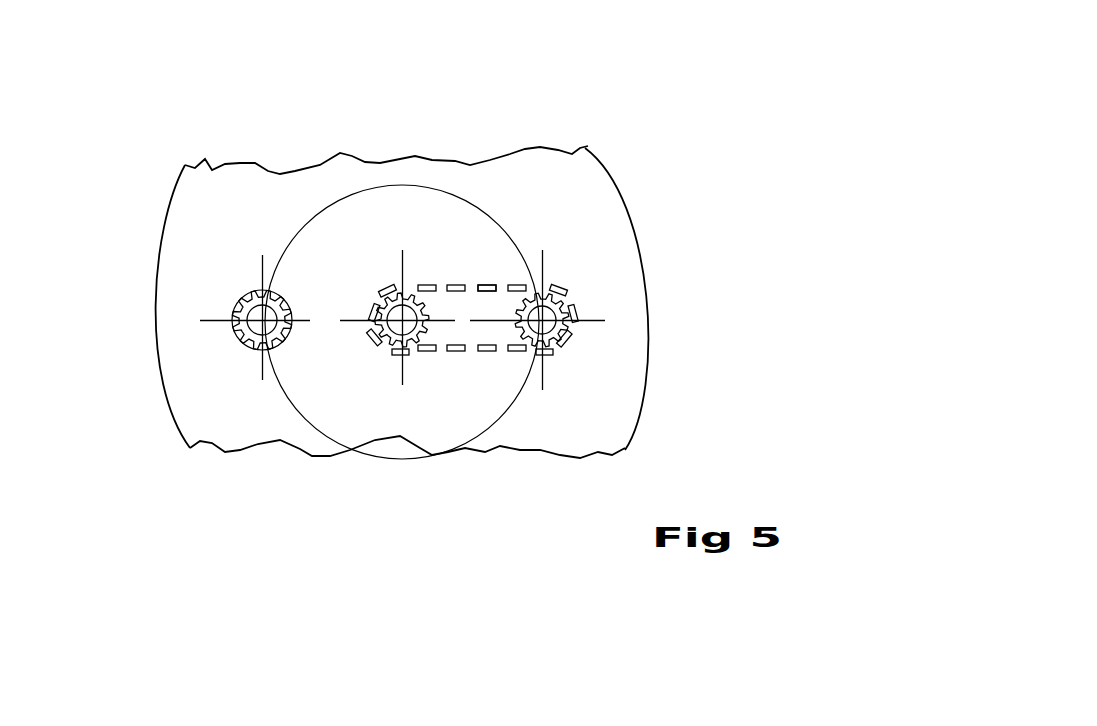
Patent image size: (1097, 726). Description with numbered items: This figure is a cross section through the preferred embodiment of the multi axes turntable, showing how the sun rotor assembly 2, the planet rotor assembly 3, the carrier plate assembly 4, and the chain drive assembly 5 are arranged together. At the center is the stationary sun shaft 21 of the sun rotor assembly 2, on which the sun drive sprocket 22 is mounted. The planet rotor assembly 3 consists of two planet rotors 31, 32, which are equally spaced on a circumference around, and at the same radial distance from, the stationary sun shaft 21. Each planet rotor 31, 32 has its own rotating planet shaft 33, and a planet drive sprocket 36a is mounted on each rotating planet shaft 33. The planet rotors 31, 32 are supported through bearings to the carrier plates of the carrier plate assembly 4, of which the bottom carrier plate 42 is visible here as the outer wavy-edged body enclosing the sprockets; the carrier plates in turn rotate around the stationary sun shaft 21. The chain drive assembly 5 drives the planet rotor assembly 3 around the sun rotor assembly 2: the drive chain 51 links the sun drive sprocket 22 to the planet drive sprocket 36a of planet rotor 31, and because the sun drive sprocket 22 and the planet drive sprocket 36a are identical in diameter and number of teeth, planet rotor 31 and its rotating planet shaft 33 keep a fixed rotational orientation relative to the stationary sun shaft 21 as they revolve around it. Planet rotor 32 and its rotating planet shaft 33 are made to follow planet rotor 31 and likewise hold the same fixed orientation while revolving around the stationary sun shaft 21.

The sun rotor assembly 2 is at (803, 153).
The planet rotor assembly 3 is at (928, 127).
The carrier plate assembly 4 is at (928, 160).
The chain drive assembly 5 is at (928, 193).
The stationary sun shaft 21 is at (400, 300).
The drive sprocket 22 is at (426, 285).
The planet rotor 31 is at (550, 300).
The planet rotor 32 is at (258, 318).
The rotating planet shaft 33 is at (406, 264).
The drive sprocket 36a is at (252, 338).
The bottom carrier plate 42 is at (155, 273).
The drive chain 51 is at (490, 287).